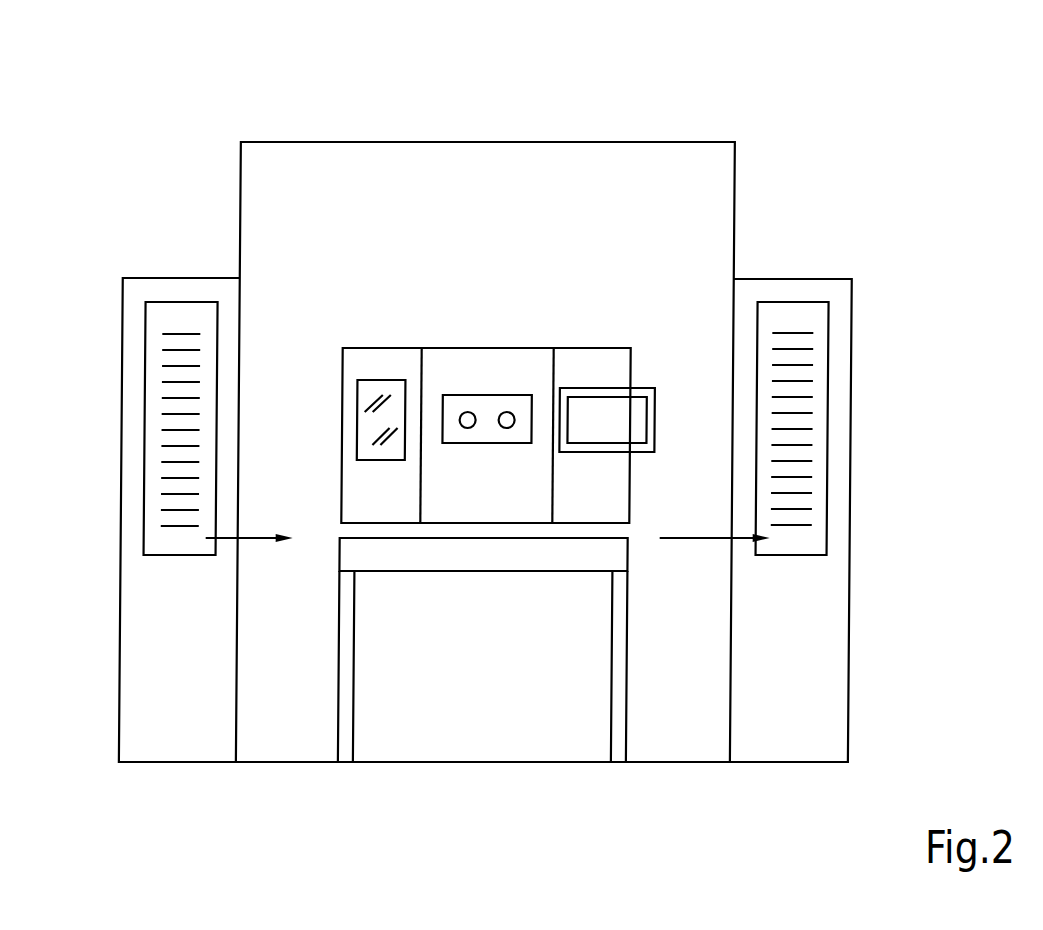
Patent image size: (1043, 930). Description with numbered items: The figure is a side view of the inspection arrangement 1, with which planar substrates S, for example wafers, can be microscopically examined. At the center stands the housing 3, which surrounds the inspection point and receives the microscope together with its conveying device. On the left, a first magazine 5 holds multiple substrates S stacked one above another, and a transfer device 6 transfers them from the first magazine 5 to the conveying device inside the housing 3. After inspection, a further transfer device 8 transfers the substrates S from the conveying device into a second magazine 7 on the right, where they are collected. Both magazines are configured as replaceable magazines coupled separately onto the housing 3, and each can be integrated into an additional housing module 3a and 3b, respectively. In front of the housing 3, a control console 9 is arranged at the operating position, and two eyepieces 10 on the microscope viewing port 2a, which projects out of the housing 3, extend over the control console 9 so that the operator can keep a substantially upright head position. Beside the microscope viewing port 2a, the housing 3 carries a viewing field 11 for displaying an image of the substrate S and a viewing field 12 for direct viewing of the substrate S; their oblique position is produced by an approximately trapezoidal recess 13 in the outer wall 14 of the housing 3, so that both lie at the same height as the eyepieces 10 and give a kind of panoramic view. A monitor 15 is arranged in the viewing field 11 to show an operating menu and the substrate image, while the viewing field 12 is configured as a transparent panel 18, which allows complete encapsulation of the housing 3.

The inspection arrangement 1 is at (196, 135).
The microscope viewing port 2a is at (533, 442).
The housing 3 is at (300, 142).
The additional housing module 3a is at (135, 285).
The additional housing module 3b is at (814, 287).
The first magazine 5 is at (190, 313).
The transfer device 6 is at (256, 540).
The second magazine 7 is at (776, 320).
The further transfer device 8 is at (721, 542).
The control console 9 is at (428, 563).
The eyepieces 10 is at (471, 428).
The viewing field 11 is at (612, 437).
The viewing field 12 is at (387, 442).
The recess 13 is at (479, 332).
The outer wall 14 is at (691, 285).
The monitor 15 is at (595, 400).
The transparent panel 18 is at (376, 390).
The substrates S is at (166, 397).